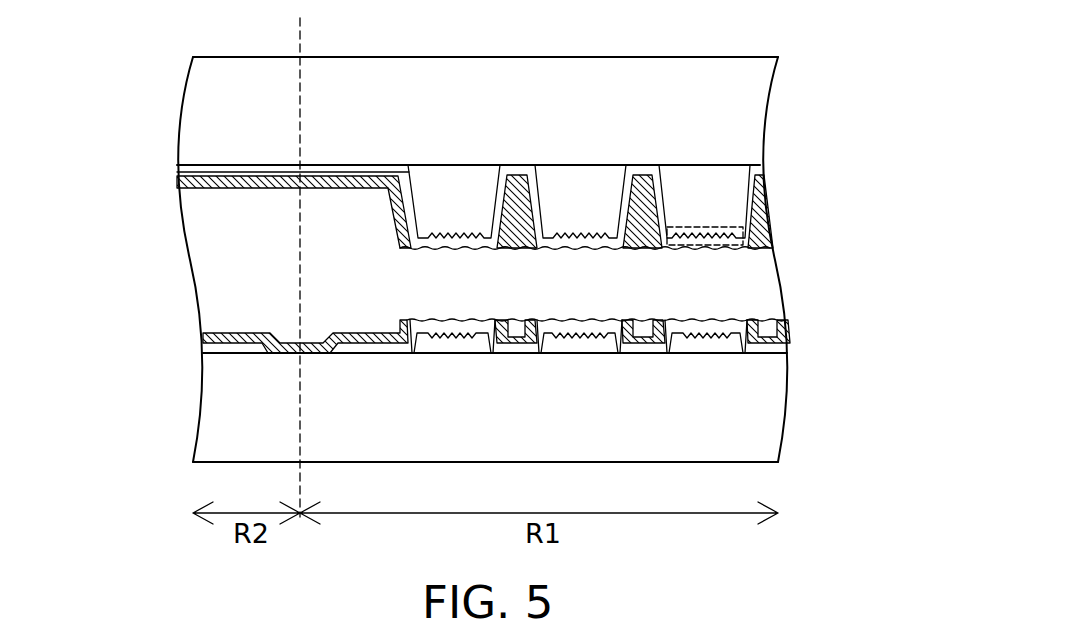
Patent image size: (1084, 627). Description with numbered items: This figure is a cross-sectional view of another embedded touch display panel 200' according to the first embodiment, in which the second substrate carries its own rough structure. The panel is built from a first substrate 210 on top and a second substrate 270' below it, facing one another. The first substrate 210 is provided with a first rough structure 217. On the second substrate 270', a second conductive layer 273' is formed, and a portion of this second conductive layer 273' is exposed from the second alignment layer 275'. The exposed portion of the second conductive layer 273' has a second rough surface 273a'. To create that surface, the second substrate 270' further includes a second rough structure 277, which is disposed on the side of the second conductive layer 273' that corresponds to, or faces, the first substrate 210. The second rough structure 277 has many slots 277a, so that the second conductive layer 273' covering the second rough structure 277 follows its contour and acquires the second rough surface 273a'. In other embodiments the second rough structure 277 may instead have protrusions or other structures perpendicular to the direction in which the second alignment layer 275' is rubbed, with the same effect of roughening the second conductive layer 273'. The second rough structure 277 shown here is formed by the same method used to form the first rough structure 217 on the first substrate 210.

The embedded touch display panel 200' is at (548, 259).
The first substrate 210 is at (160, 58).
The first rough structure 217 is at (746, 237).
The second substrate 270' is at (485, 374).
The second conductive layer 273' is at (543, 354).
The second rough surface 273a' is at (652, 304).
The second alignment layer 275' is at (815, 328).
The second rough structure 277 is at (725, 348).
The slots 277a is at (690, 340).